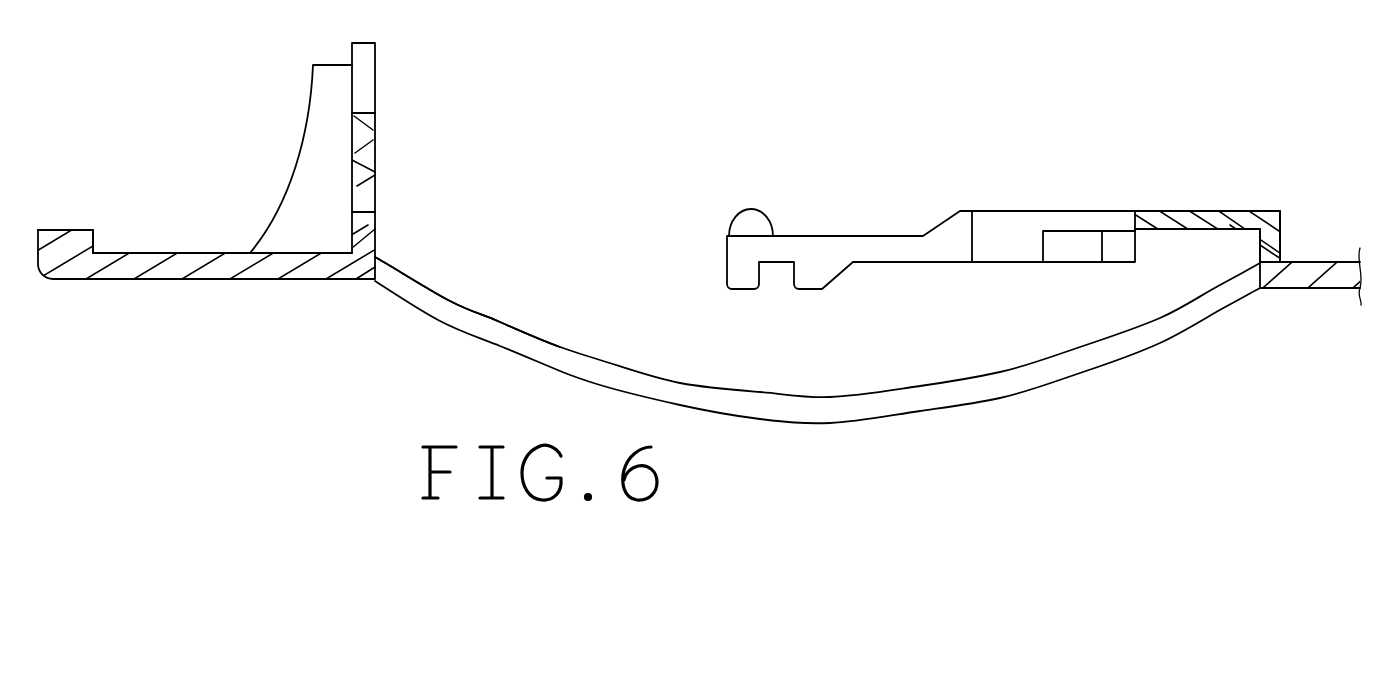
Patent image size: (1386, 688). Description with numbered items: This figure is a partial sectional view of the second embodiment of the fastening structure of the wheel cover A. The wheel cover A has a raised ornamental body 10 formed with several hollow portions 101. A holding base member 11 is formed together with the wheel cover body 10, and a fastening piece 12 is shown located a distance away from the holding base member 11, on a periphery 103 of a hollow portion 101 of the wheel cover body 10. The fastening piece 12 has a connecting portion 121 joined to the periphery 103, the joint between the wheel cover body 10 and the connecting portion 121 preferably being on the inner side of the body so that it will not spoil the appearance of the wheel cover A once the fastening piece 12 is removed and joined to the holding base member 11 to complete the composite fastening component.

The raised ornamental body 10 is at (873, 421).
The hollow portion 101 is at (552, 293).
The periphery 103 is at (1253, 280).
The holding base member 11 is at (308, 203).
The wheel cover A is at (208, 272).
The fastening piece 12 is at (885, 250).
The connecting portion 121 is at (1190, 217).